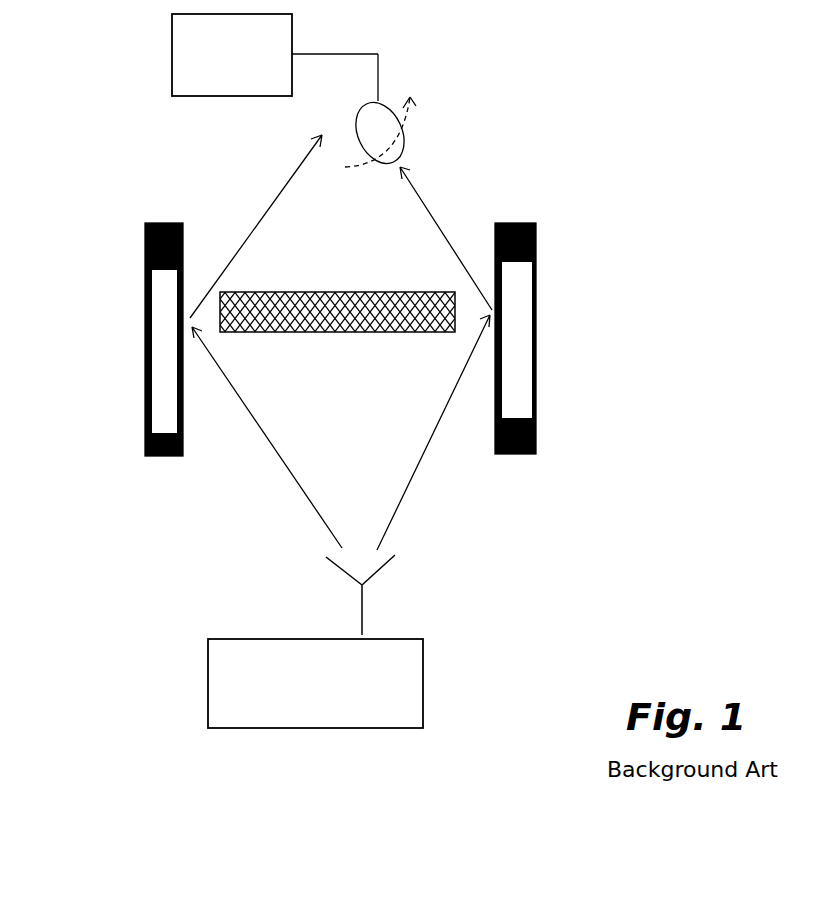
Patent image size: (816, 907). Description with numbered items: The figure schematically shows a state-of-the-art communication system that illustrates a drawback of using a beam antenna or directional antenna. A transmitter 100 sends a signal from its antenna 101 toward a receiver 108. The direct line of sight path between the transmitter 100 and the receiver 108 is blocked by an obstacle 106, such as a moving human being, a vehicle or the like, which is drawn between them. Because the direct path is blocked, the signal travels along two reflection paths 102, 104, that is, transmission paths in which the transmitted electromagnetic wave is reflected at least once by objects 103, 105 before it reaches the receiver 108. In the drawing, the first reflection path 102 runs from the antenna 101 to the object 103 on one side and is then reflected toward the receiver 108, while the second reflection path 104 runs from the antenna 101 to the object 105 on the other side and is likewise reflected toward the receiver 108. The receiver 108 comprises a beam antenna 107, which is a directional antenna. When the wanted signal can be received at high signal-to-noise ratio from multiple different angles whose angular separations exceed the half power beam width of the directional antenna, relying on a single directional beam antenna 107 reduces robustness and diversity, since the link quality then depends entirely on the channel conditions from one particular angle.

The transmitter 100 is at (315, 683).
The antenna 101 is at (390, 573).
The reflection path 102 is at (275, 460).
The object 103 is at (163, 360).
The reflection path 104 is at (418, 470).
The object 105 is at (518, 345).
The obstacle 106 is at (337, 312).
The beam antenna 107 is at (387, 128).
The receiver 108 is at (275, 55).